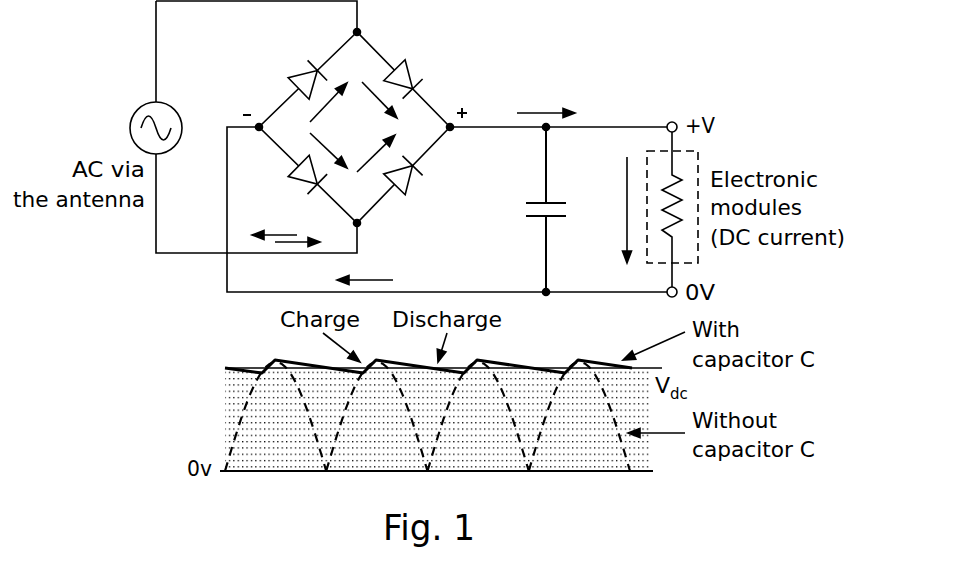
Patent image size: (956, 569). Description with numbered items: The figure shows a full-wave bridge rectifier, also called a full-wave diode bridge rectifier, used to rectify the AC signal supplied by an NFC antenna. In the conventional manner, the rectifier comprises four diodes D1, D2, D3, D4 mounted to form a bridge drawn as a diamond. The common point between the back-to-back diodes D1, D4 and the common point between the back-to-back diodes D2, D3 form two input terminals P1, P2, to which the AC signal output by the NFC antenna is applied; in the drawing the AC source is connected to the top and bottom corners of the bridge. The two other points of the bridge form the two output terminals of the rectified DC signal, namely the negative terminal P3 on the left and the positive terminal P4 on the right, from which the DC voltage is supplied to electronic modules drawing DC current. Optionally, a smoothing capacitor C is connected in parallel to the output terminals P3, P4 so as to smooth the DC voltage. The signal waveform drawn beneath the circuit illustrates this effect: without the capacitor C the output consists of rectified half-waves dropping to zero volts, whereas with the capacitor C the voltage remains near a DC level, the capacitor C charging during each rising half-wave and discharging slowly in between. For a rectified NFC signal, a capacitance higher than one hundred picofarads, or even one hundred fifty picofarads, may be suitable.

The diode D1 is at (414, 75).
The diode D2 is at (294, 176).
The diode D3 is at (419, 177).
The diode D4 is at (292, 75).
The smoothing capacitor C is at (551, 210).
The input terminal P1 is at (371, 23).
The input terminal P2 is at (371, 238).
The negative output terminal P3 is at (252, 142).
The positive output terminal P4 is at (462, 141).